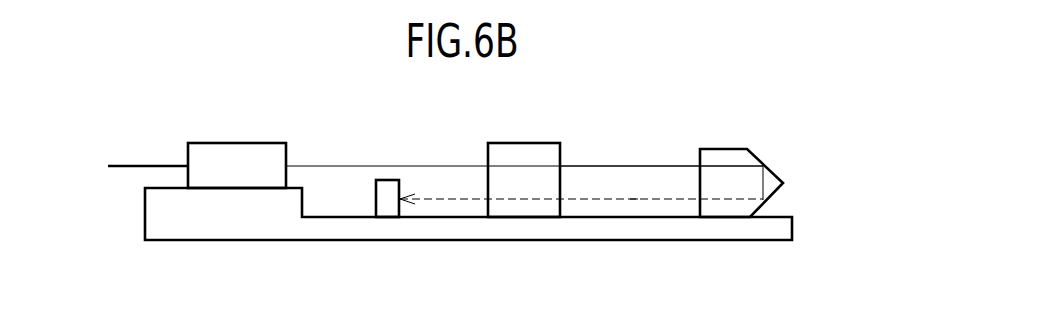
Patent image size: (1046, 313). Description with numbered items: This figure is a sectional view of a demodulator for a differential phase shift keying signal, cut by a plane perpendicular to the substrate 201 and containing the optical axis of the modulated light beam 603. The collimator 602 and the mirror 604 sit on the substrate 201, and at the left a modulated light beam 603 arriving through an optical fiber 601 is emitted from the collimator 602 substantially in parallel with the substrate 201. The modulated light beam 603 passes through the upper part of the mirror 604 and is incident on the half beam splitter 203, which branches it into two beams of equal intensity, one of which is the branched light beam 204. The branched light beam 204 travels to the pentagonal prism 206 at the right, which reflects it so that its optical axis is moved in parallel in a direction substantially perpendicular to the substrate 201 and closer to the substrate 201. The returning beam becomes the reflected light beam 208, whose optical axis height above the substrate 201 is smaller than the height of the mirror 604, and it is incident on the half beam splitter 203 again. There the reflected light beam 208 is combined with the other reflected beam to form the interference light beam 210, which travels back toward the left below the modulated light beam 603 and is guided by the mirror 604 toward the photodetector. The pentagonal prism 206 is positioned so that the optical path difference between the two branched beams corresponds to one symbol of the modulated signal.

The substrate 201 is at (145, 213).
The half beam splitter 203 is at (524, 143).
The branched light beam 204 is at (636, 165).
The pentagonal prism 206 is at (773, 173).
The reflected light beam 208 is at (635, 200).
The interference light beam 210 is at (445, 200).
The optical fiber 601 is at (148, 163).
The collimator 602 is at (237, 143).
The modulated light beam 603 is at (331, 165).
The mirror 604 is at (376, 197).